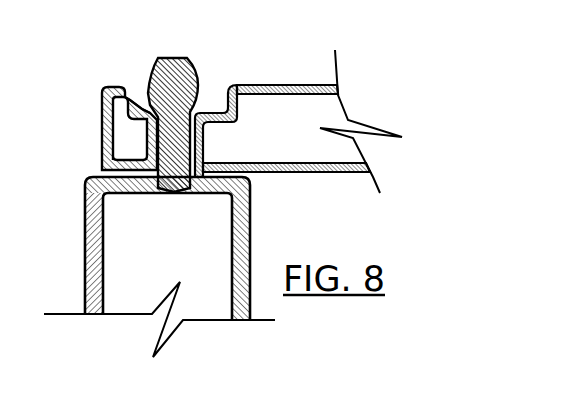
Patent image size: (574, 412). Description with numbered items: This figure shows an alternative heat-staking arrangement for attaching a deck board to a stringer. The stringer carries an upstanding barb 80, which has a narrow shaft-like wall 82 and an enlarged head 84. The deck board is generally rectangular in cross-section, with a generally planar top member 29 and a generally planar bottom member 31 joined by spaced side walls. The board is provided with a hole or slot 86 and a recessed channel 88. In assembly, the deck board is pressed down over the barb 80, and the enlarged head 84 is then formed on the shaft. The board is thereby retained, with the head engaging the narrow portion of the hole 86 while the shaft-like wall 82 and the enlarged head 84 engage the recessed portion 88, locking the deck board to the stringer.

The top member 29 is at (292, 84).
The bottom member 31 is at (312, 176).
The upstanding barb 80 is at (194, 96).
The shaft-like wall 82 is at (100, 157).
The enlarged head 84 is at (196, 69).
The hole or slot 86 is at (207, 147).
The recessed channel 88 is at (133, 102).